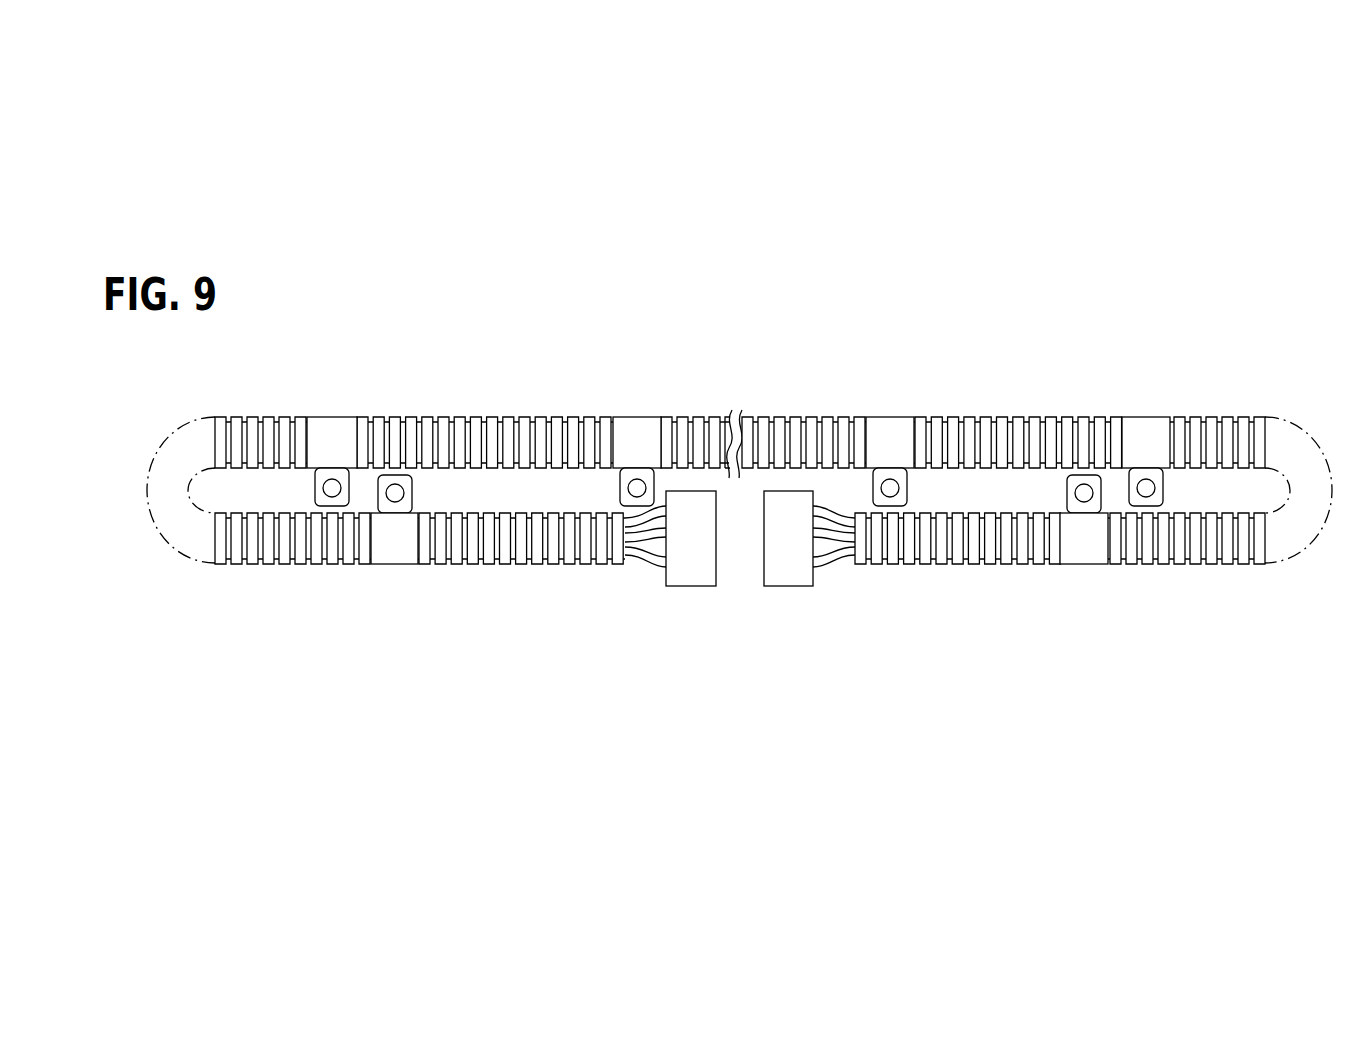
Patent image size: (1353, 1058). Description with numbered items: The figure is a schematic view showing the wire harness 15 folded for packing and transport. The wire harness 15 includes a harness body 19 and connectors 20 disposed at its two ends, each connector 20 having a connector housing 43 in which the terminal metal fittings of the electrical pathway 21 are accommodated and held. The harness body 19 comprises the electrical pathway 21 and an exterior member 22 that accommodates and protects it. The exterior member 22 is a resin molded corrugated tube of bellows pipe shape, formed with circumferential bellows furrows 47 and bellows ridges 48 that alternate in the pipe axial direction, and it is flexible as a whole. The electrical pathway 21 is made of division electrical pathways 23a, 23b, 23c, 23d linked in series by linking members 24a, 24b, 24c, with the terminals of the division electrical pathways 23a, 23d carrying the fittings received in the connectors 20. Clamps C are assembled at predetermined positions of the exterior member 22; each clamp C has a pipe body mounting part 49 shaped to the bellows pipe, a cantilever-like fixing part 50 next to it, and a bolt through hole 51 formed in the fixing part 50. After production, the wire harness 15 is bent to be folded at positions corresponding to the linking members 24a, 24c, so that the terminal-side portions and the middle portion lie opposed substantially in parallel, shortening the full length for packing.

The wire harness 15 is at (814, 306).
The harness body 19 is at (958, 414).
The connector 20 is at (688, 592).
The electrical pathway 21 is at (648, 560).
The exterior member 22 is at (545, 411).
The division electrical pathway 23a is at (485, 567).
The division electrical pathway 23b is at (465, 420).
The division electrical pathway 23c is at (1053, 422).
The division electrical pathway 23d is at (1003, 563).
The linking member 24a is at (172, 524).
The linking member 24b is at (762, 422).
The linking member 24c is at (1312, 522).
The connector housing 43 is at (706, 571).
The bellows furrow 47 is at (1183, 566).
The bellows ridge 48 is at (1178, 566).
The pipe body mounting part 49 is at (342, 437).
The fixing part 50 is at (325, 470).
The bolt through hole 51 is at (332, 488).
The clamp C is at (365, 347).